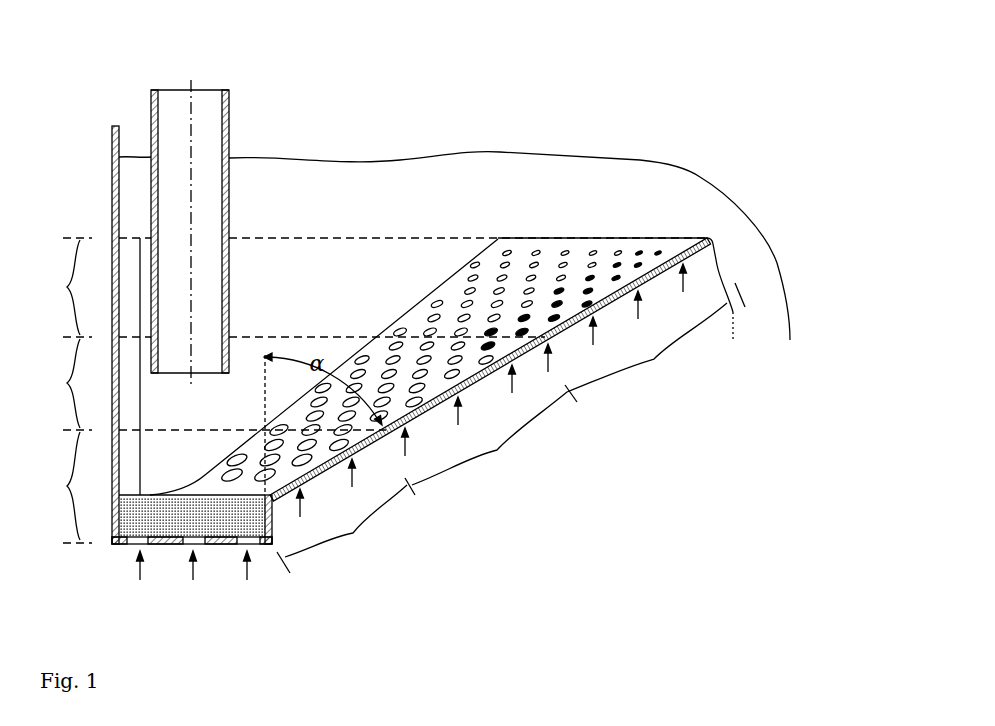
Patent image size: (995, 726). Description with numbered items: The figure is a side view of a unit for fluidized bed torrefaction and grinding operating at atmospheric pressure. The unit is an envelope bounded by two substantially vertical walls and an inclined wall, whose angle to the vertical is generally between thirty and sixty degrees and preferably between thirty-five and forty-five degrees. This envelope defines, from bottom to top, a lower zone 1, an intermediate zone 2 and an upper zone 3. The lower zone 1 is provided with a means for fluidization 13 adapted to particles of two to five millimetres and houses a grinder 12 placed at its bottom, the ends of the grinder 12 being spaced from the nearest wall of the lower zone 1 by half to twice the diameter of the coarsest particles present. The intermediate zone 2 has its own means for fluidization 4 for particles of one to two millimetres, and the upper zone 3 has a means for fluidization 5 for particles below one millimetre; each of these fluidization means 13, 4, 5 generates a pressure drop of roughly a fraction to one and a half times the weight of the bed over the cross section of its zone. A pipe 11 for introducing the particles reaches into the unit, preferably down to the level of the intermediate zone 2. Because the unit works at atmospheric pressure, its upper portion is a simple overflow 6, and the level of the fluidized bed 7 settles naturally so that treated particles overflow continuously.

The lower zone 1 is at (64, 486).
The intermediate zone 2 is at (62, 383).
The upper zone 3 is at (62, 287).
The means for fluidization of the intermediate zone 4 is at (486, 443).
The means for fluidization of the upper zone 5 is at (655, 342).
The overflow 6 is at (757, 275).
The fluidized bed 7 is at (437, 191).
The pipe for introducing the particles 11 is at (203, 132).
The grinder 12 is at (150, 515).
The means for fluidization of the lower zone 13 is at (342, 529).